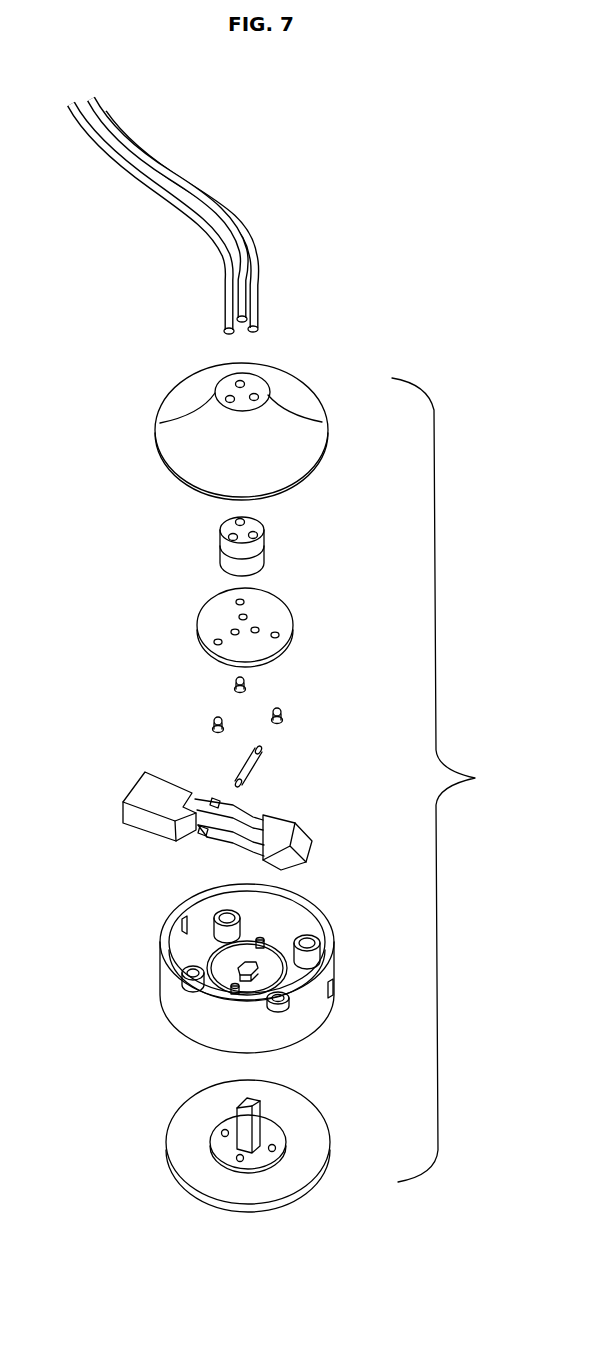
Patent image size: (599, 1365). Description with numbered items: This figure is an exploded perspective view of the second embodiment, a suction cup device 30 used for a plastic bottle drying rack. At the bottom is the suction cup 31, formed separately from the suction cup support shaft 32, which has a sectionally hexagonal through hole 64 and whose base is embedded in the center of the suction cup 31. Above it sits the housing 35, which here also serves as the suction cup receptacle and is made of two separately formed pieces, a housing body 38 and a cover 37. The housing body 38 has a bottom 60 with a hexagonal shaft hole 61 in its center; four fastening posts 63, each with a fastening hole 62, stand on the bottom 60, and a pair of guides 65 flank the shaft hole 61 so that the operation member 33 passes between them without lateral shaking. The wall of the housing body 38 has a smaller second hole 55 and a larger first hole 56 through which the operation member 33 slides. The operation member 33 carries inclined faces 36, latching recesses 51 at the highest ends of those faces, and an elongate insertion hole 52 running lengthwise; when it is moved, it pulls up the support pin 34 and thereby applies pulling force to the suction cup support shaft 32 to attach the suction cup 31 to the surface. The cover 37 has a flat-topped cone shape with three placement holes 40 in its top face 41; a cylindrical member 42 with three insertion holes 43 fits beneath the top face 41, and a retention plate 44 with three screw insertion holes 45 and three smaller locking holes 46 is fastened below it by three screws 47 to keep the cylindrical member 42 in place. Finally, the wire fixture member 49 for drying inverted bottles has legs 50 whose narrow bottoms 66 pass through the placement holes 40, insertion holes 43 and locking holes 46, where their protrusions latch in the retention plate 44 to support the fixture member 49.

The suction cup device 30 is at (449, 780).
The suction cup 31 is at (222, 1146).
The suction cup support shaft 32 is at (259, 1130).
The operation member 33 is at (182, 816).
The support pin 34 is at (261, 752).
The housing 35 is at (237, 975).
The inclined faces 36 is at (252, 820).
The cover 37 is at (273, 421).
The housing body 38 is at (212, 1025).
The placement holes 40 is at (236, 383).
The top face 41 is at (262, 388).
The cylindrical member 42 is at (241, 534).
The insertion holes 43 is at (245, 521).
The retention plate 44 is at (245, 628).
The screw insertion holes 45 is at (236, 601).
The locking holes 46 is at (248, 615).
The screws 47 is at (233, 687).
The fixture member 49 is at (152, 217).
The legs 50 is at (226, 295).
The latching recesses 51 is at (215, 798).
The elongate insertion hole 52 is at (258, 852).
The second hole 55 is at (181, 926).
The first hole 56 is at (334, 991).
The bottom 60 is at (195, 956).
The hexagonal shaft hole 61 is at (252, 978).
The fastening holes 62 is at (222, 917).
The fastening posts 63 is at (228, 910).
The hexagonal through hole 64 is at (243, 1125).
The guides 65 is at (264, 940).
The bottoms 66 is at (224, 329).